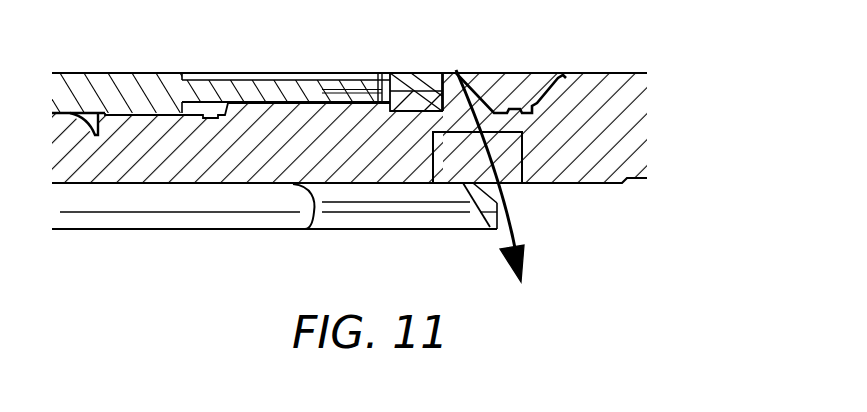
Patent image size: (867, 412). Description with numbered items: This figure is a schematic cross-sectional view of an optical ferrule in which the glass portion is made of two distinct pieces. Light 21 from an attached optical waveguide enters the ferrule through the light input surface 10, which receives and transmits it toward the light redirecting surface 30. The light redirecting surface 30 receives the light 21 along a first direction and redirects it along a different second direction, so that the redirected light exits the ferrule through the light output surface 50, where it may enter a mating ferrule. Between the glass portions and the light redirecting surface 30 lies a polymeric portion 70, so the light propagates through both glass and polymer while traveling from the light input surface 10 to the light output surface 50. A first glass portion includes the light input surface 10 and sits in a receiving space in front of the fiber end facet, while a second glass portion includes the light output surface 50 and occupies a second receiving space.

The light 21 is at (352, 89).
The light input surface 10 is at (402, 76).
The light redirecting surface 30 is at (463, 78).
The polymeric portion 70 is at (470, 123).
The light output surface 50 is at (507, 187).